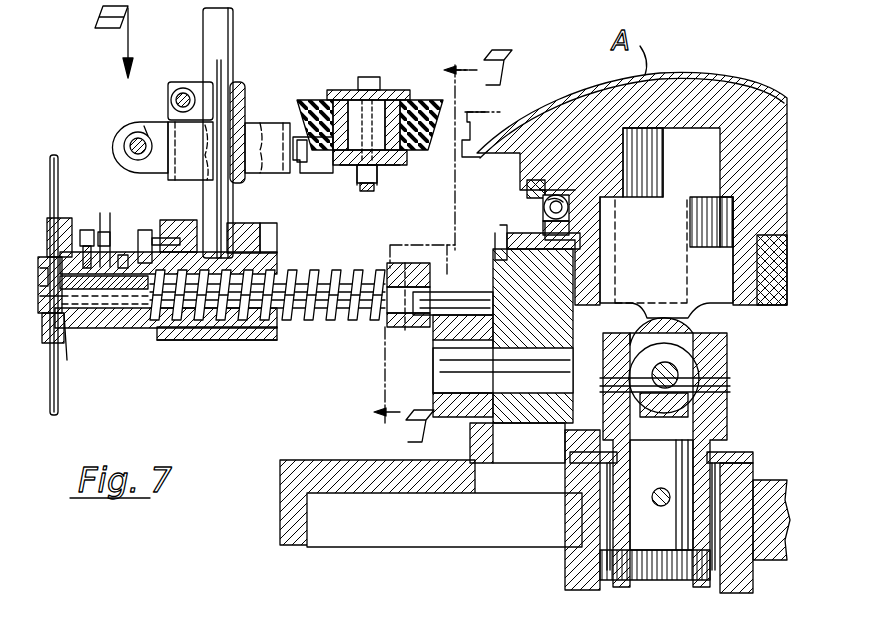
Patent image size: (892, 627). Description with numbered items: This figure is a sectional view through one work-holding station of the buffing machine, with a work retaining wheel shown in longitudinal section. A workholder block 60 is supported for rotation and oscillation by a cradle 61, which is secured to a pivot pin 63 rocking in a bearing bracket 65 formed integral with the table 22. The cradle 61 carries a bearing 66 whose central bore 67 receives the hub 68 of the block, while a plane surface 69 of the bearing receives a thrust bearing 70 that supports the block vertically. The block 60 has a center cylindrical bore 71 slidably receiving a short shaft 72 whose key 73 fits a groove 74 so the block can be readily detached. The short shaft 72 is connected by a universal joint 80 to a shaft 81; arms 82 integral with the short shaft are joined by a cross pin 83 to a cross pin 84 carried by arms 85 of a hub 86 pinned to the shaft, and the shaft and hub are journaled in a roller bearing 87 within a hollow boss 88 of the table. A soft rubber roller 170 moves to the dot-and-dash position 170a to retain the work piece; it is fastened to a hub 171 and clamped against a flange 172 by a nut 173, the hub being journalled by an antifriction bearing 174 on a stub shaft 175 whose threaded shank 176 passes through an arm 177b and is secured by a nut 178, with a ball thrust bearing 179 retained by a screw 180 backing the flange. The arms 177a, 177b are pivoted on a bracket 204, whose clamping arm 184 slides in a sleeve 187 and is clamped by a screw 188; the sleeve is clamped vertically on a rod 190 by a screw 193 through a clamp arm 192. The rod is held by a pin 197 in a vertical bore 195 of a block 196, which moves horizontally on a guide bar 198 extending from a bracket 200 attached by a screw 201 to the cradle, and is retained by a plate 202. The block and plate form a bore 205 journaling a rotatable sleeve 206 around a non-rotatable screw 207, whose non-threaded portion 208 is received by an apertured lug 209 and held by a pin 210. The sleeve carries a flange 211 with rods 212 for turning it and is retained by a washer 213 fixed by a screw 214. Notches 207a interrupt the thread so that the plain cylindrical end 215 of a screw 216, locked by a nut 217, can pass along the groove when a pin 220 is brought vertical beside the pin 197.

The table 22 is at (316, 460).
The workholder block 60 is at (762, 108).
The cradle 61 is at (562, 305).
The pivot pin 63 is at (428, 372).
The bearing bracket 65 is at (478, 456).
The bearing 66 is at (543, 205).
The central bore 67 is at (592, 264).
The hub 68 is at (560, 222).
The plane surface 69 is at (565, 208).
The thrust bearing 70 is at (528, 182).
The center cylindrical bore 71 is at (714, 214).
The short shaft 72 is at (658, 205).
The key 73 is at (592, 246).
The groove 74 is at (688, 228).
The universal joint 80 is at (722, 414).
The shaft 81 is at (660, 568).
The arms 82 is at (700, 333).
The cross pin 83 is at (662, 405).
The cross pin 84 is at (722, 373).
The arms 85 is at (603, 432).
The hub 86 is at (626, 522).
The roller bearing 87 is at (566, 530).
The hollow boss 88 is at (752, 580).
The soft rubber roller 170 is at (356, 330).
The roller work-engaging position 170a is at (465, 112).
The hub 171 is at (418, 100).
The flange 172 is at (432, 100).
The nut 173 is at (402, 142).
The antifriction bearing 174 is at (390, 158).
The stub shaft 175 is at (380, 162).
The threaded shank 176 is at (372, 168).
The lower arm 177a is at (300, 163).
The upper arm 177b is at (338, 172).
The nut 178 is at (355, 180).
The ball thrust bearing 179 is at (340, 90).
The screw 180 is at (390, 62).
The clamping arm 184 is at (128, 124).
The sleeve 187 is at (240, 84).
The screw 188 is at (146, 132).
The rod 190 is at (204, 24).
The clamp arm 192 is at (214, 75).
The screw 193 is at (184, 84).
The vertical bore 195 is at (200, 222).
The block 196 is at (262, 252).
The pin 197 is at (170, 214).
The horizontal guide bar 198 is at (338, 325).
The bracket 200 is at (480, 245).
The screw 201 is at (505, 242).
The plate 202 is at (212, 342).
The bracket 204 is at (252, 124).
The internal cylindrical bore 205 is at (262, 228).
The rotatable sleeve 206 is at (276, 262).
The non-rotatable screw 207 is at (267, 321).
The notch 207a is at (122, 254).
The non-threaded portion 208 is at (392, 288).
The apertured lug 209 is at (392, 328).
The pin 210 is at (418, 258).
The flange 211 is at (68, 348).
The rod 212 is at (56, 158).
The washer 213 is at (44, 316).
The screw 214 is at (40, 278).
The plain cylindrical end 215 is at (84, 228).
The screw 216 is at (104, 232).
The nut 217 is at (102, 212).
The pin 220 is at (146, 232).